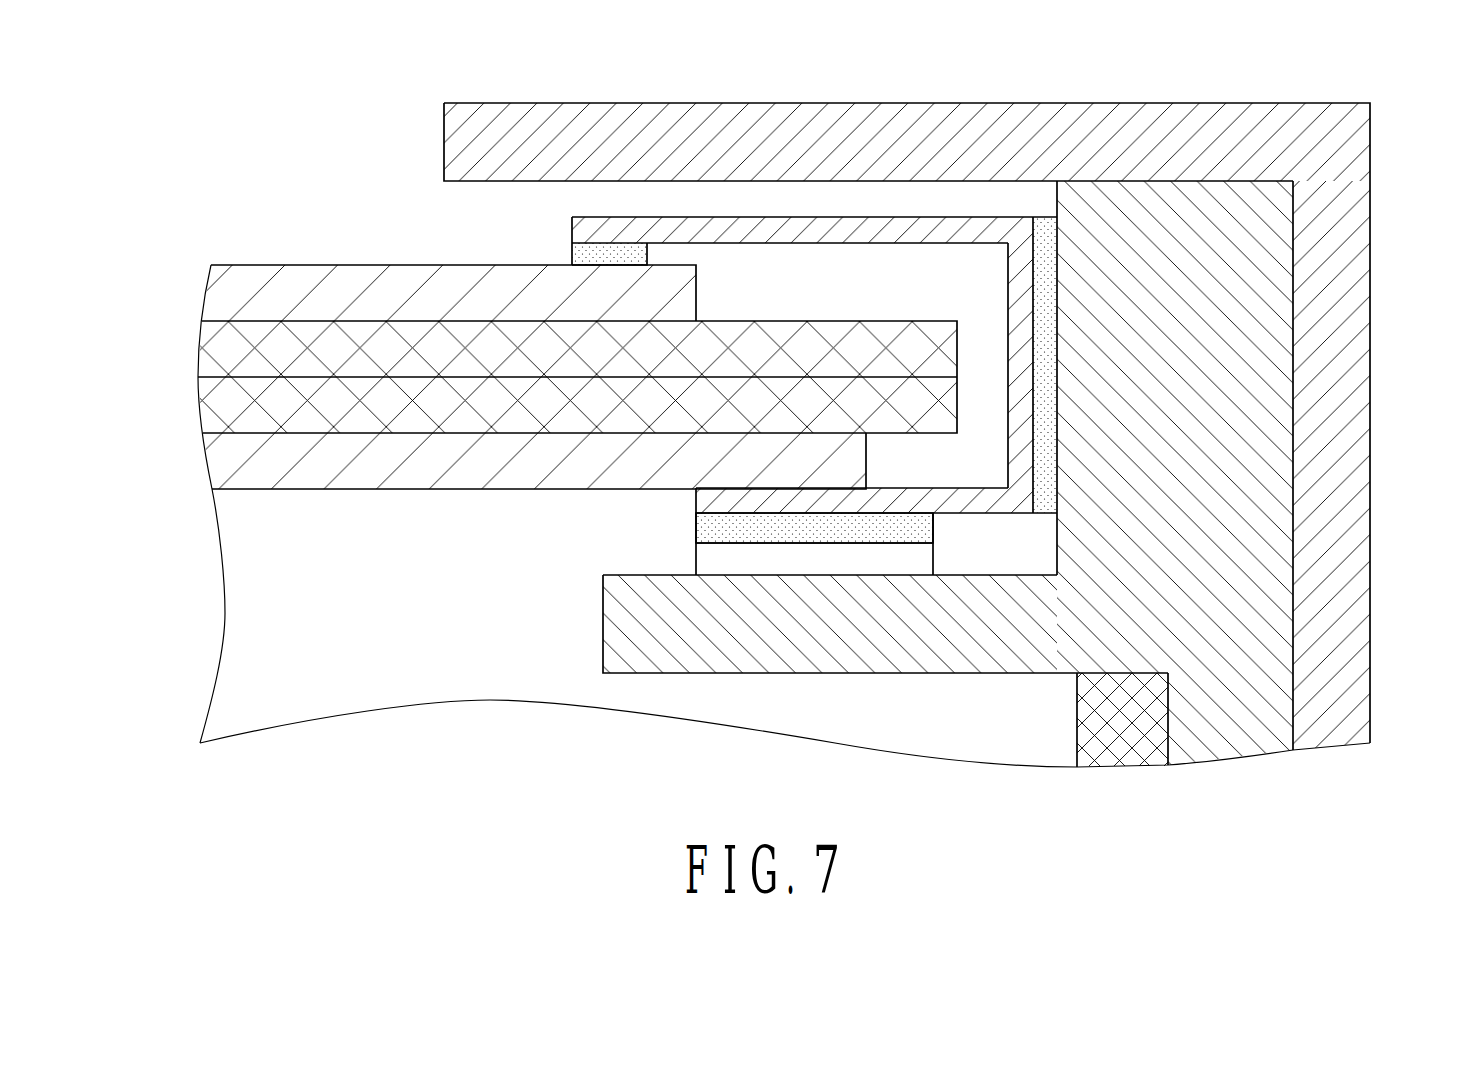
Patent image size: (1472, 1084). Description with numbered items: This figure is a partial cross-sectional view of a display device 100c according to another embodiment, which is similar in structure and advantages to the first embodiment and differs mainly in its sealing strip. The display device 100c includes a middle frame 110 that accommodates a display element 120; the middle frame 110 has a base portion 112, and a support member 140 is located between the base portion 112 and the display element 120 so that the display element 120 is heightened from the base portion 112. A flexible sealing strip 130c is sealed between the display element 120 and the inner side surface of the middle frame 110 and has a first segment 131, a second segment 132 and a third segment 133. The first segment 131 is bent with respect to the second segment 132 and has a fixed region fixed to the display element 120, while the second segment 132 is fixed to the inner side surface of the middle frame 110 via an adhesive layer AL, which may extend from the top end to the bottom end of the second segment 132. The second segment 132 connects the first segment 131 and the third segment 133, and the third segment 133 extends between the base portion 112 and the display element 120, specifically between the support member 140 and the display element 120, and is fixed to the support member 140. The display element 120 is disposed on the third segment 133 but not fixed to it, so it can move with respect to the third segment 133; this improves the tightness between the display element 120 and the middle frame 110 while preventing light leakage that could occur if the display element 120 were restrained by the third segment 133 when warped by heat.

The display device 100c is at (180, 127).
The middle frame 110 is at (1212, 376).
The base portion 112 is at (827, 603).
The display element 120 is at (230, 300).
The flexible sealing strip 130c is at (1011, 302).
The first segment 131 is at (820, 230).
The second segment 132 is at (1017, 294).
The third segment 133 is at (963, 498).
The adhesive layer AL is at (1045, 253).
The support member 140 is at (887, 555).